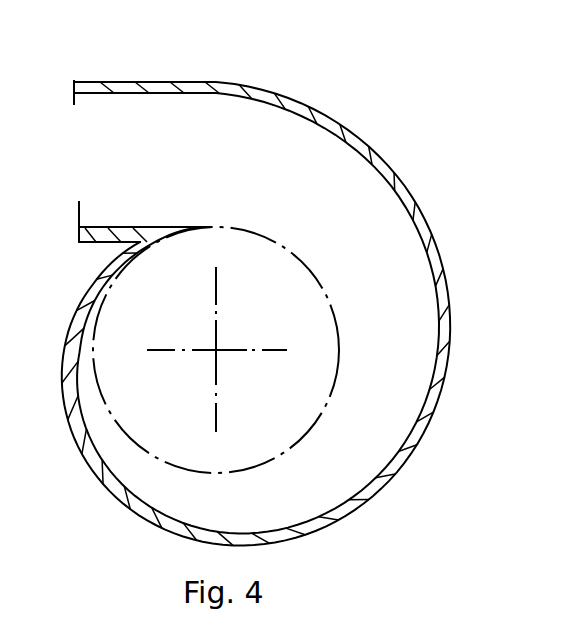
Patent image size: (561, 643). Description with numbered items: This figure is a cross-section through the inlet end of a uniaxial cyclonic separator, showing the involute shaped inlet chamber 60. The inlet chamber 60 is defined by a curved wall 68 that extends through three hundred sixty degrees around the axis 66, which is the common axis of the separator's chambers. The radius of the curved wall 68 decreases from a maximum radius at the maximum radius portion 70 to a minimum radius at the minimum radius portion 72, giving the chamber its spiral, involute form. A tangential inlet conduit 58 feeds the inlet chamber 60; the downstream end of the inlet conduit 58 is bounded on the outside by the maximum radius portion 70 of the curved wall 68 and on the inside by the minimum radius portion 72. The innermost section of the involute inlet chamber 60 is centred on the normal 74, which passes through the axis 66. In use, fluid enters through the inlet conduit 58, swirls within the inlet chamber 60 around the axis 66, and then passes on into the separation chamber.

The inlet conduit 58 is at (122, 170).
The inlet chamber 60 is at (402, 346).
The axis 66 is at (217, 353).
The curved wall 68 is at (404, 186).
The maximum radius portion 70 is at (211, 82).
The minimum radius portion 72 is at (212, 227).
The normal 74 is at (216, 288).